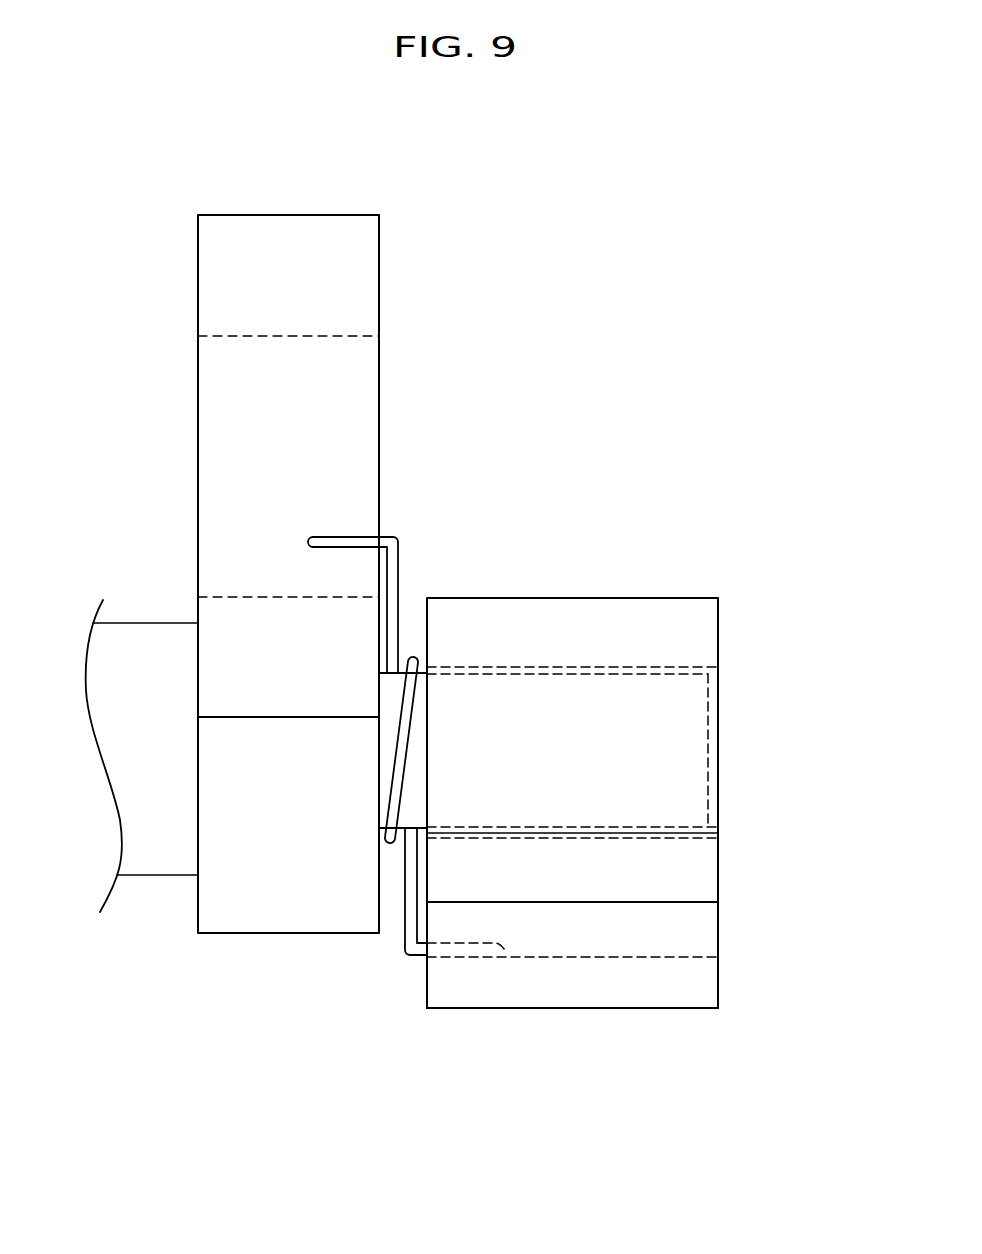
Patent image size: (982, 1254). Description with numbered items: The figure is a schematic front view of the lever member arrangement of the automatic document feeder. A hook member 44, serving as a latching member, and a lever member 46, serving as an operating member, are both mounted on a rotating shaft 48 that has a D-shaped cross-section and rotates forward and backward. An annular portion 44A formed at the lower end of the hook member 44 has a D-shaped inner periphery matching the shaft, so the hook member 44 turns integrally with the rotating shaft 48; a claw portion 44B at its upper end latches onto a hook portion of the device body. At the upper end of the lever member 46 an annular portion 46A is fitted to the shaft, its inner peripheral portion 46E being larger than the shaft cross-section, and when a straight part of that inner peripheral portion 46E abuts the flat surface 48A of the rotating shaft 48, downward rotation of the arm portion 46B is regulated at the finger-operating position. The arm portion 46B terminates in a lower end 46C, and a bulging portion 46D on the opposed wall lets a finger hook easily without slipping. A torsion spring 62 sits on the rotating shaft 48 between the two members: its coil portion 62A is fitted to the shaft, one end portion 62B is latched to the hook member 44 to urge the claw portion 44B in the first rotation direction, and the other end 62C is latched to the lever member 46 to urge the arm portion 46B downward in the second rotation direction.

The hook member 44 is at (288, 213).
The annular portion 44A is at (211, 845).
The claw portion 44B is at (297, 336).
The lever member 46 is at (720, 616).
The annular portion 46A is at (592, 598).
The arm portion 46B is at (718, 990).
The lower end 46C is at (660, 1009).
The bulging portion 46D is at (644, 902).
The inner peripheral portion 46E is at (718, 668).
The rotating shaft 48 is at (392, 685).
The flat surface 48A is at (662, 770).
The torsion spring 62 is at (394, 536).
The coil portion 62A is at (398, 843).
The one end portion 62B is at (323, 540).
The other end 62C is at (500, 947).